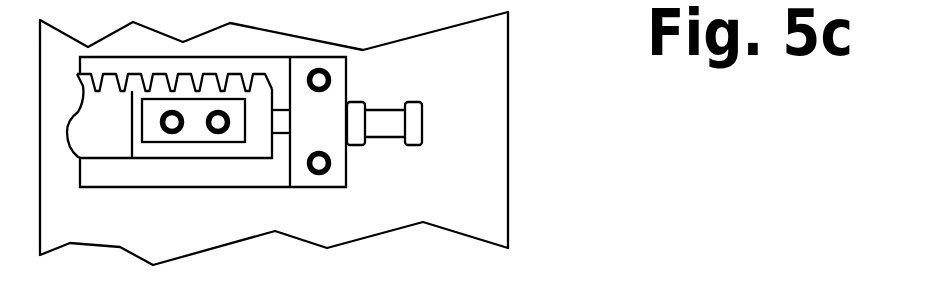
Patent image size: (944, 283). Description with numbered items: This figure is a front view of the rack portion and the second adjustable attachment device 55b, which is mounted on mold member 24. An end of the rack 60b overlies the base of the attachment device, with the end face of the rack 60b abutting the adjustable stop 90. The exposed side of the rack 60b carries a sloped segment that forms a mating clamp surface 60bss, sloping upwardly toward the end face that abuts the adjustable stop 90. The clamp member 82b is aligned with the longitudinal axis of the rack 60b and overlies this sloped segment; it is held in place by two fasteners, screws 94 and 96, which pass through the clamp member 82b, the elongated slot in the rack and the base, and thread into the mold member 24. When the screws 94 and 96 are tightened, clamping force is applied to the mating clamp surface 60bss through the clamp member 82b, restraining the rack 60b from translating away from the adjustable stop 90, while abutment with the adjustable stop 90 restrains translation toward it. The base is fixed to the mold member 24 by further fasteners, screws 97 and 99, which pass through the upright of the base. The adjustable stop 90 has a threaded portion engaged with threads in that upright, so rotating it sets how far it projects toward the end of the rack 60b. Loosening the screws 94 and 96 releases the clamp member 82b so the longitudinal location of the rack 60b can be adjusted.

The mold member 24 is at (467, 192).
The second adjustable attachment device 55b is at (526, 42).
The rack 60b is at (173, 142).
The mating clamp surface 60bss is at (257, 107).
The clamp member 82b is at (173, 143).
The screw 94 is at (173, 118).
The screw 96 is at (218, 124).
The screw 97 is at (319, 82).
The screw 99 is at (319, 161).
The adjustable stop 90 is at (412, 112).